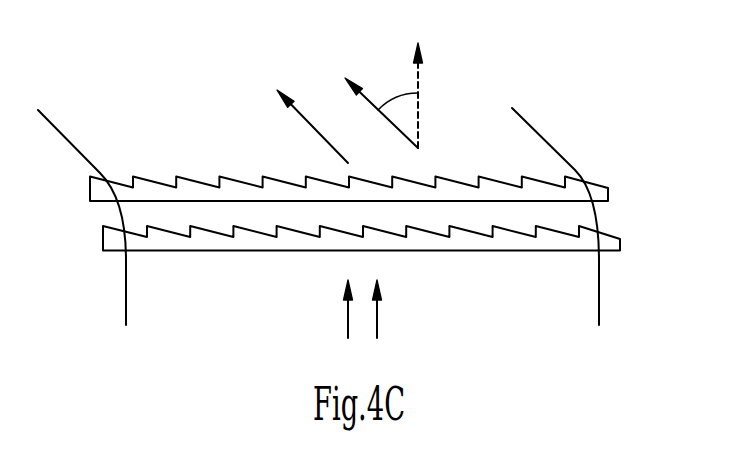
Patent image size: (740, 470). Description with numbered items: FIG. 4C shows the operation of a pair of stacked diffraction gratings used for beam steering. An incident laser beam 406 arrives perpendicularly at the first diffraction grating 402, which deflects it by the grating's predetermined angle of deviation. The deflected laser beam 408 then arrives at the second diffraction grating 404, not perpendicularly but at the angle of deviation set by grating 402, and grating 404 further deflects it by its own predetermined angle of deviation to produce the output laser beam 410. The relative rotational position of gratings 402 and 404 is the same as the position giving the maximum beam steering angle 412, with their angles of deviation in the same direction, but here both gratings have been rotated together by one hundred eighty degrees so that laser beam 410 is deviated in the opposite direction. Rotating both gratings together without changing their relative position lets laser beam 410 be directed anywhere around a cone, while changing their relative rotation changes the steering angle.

The first diffraction grating 402 is at (621, 245).
The second diffraction grating 404 is at (609, 194).
The incident laser beam 406 is at (347, 322).
The laser beam 408 is at (600, 216).
The laser beam 410 is at (315, 125).
The maximum beam steering angle 412 is at (396, 101).